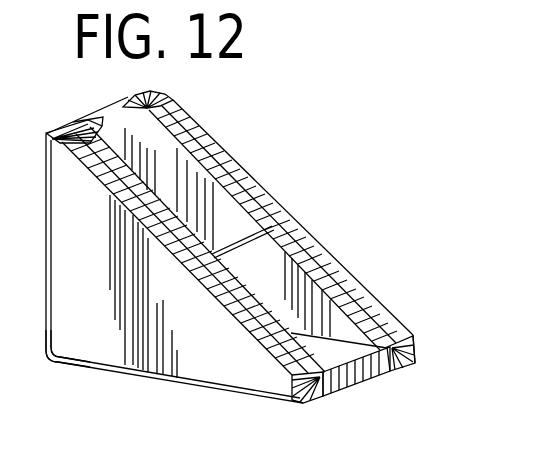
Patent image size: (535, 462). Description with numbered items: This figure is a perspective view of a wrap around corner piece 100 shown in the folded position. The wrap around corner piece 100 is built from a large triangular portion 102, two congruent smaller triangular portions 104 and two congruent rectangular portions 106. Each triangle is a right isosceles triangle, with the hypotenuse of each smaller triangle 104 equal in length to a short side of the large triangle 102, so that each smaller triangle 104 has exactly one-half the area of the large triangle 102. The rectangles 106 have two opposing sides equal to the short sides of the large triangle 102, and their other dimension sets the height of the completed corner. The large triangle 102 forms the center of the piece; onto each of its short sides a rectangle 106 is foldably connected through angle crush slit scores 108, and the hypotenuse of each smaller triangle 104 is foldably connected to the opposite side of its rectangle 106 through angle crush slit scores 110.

The wrap around corner piece 100 is at (324, 187).
The large triangular portion 102 is at (126, 323).
The smaller triangular portions 104 is at (228, 160).
The rectangular portions 106 is at (113, 118).
The angle crush slit scores 108 is at (45, 240).
The angle crush slit scores 110 is at (147, 108).